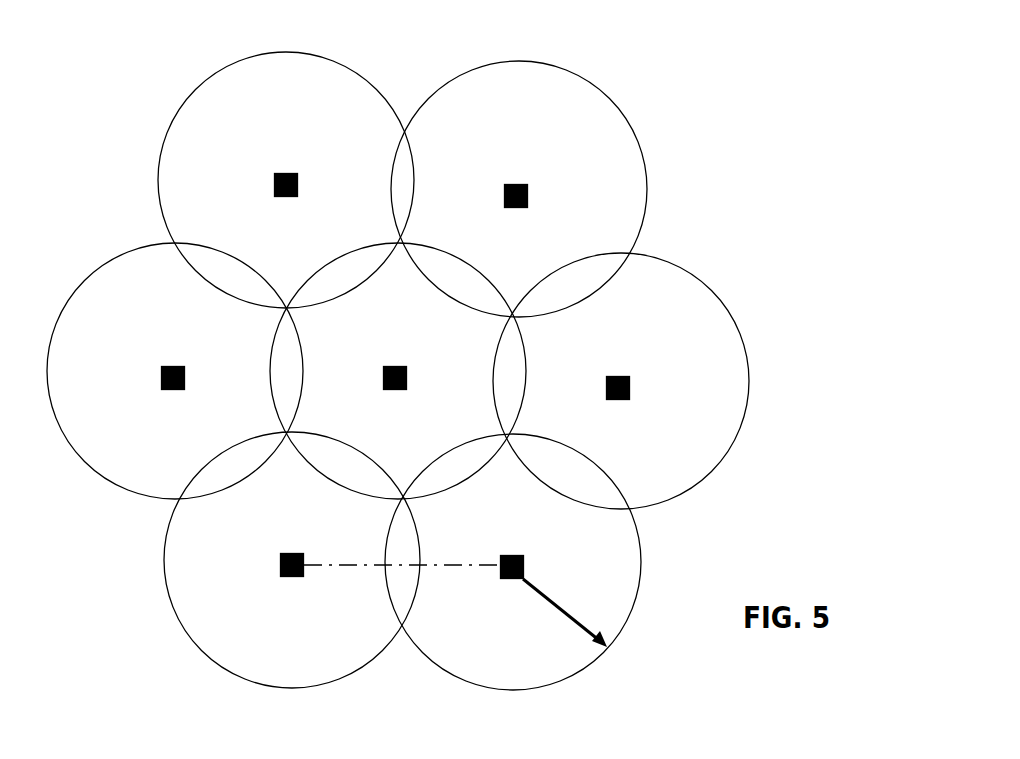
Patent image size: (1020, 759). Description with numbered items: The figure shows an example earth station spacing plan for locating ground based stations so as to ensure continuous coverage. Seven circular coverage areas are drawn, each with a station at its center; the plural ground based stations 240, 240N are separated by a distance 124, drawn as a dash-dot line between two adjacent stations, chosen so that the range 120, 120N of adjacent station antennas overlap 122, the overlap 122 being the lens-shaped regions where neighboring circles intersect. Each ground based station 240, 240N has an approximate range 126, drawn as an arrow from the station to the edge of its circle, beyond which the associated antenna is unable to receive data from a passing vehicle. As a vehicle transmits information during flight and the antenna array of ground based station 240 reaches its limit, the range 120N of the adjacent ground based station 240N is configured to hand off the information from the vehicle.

The range 120 is at (233, 673).
The range 120N is at (477, 686).
The overlap 122 is at (326, 448).
The distance 124 is at (357, 581).
The approximate range 126 is at (549, 615).
The ground based station 240 is at (288, 546).
The ground based station 240N is at (511, 545).